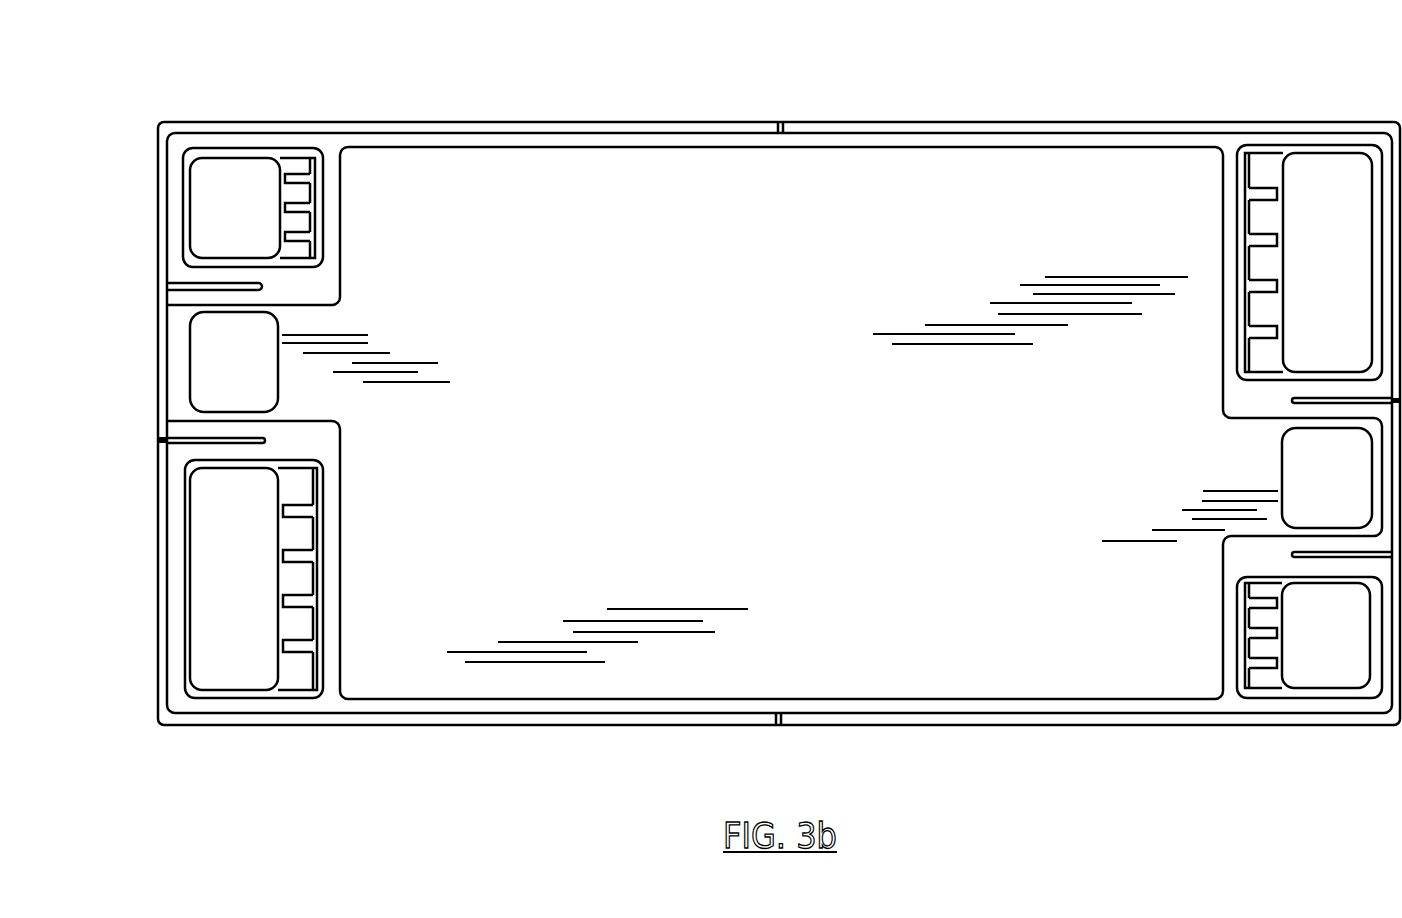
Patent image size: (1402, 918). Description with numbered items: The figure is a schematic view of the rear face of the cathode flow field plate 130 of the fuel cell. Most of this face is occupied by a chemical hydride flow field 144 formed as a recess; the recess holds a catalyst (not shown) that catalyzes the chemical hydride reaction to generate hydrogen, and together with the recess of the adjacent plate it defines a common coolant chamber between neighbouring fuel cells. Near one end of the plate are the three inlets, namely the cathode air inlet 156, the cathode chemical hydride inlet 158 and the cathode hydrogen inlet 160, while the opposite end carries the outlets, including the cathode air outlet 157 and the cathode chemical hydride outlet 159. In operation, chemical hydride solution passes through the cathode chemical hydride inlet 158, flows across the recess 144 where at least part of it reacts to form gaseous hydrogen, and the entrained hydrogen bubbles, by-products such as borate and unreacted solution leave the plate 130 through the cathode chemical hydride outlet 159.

The cathode flow field plate 130 is at (889, 744).
The chemical hydride flow field 144 is at (828, 192).
The cathode air inlet 156 is at (1333, 178).
The cathode air outlet 157 is at (210, 646).
The cathode chemical hydride inlet 158 is at (1297, 490).
The cathode chemical hydride outlet 159 is at (215, 380).
The cathode hydrogen inlet 160 is at (223, 218).